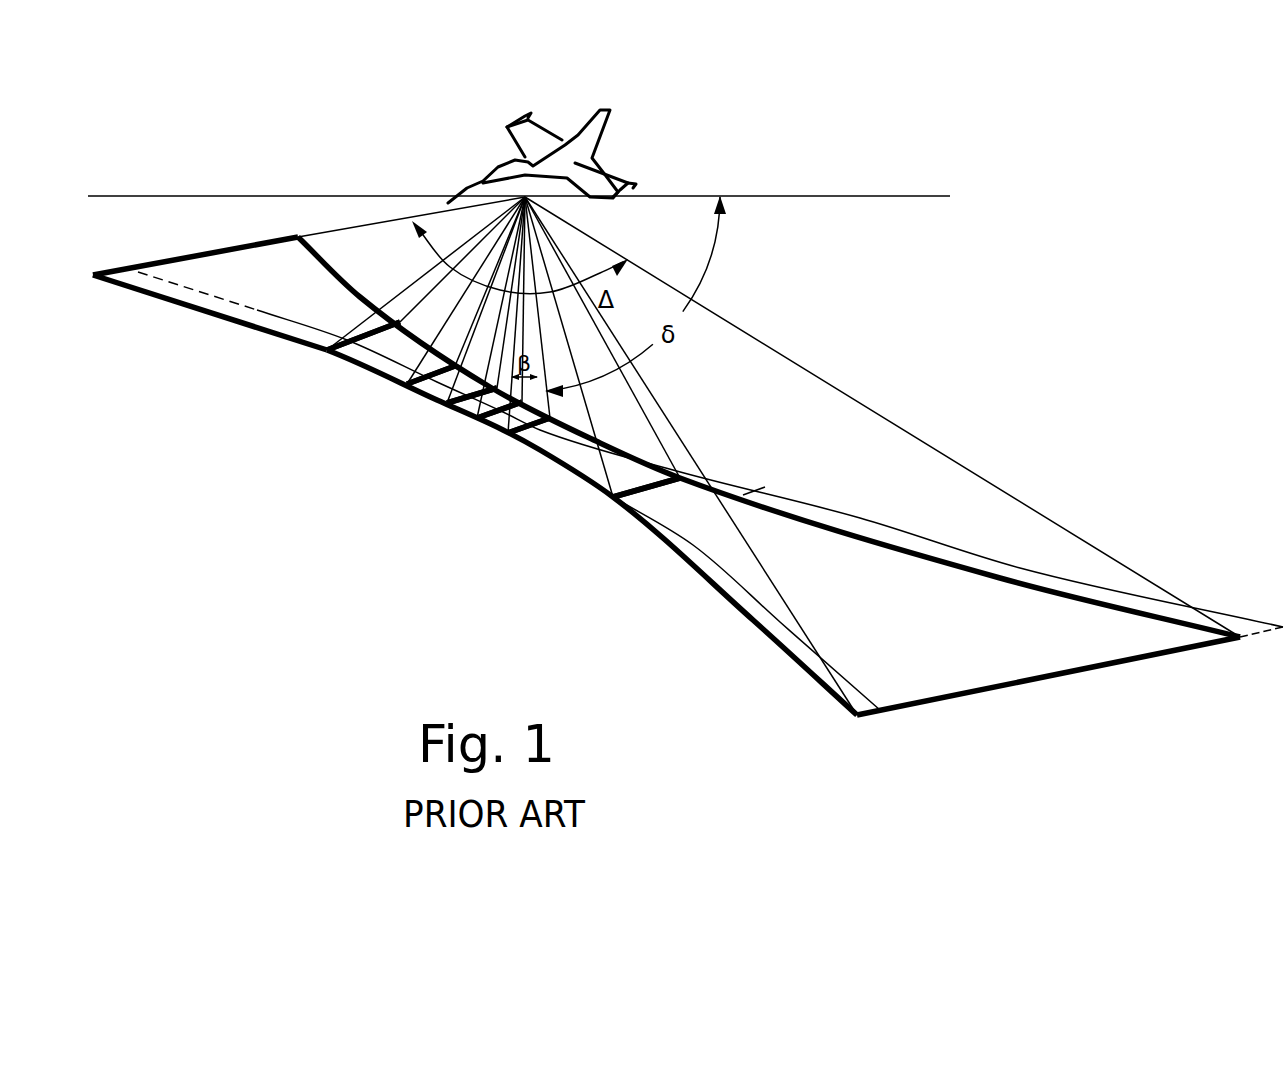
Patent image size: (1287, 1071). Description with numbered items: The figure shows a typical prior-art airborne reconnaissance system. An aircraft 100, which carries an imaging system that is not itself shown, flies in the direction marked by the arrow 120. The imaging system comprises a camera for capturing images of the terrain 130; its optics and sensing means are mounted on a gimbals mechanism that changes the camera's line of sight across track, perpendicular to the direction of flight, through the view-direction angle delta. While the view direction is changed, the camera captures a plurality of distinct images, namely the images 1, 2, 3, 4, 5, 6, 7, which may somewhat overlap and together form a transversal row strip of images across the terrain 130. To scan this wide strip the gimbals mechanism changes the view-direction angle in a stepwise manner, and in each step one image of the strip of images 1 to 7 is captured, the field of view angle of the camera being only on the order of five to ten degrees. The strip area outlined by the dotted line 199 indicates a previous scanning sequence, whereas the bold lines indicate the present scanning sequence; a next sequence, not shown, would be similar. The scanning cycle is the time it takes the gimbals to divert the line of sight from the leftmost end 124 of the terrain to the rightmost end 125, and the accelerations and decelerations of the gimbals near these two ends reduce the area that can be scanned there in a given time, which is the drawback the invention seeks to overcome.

The aircraft 100 is at (583, 137).
The rightmost end 125 is at (215, 250).
The terrain 130 is at (150, 297).
The image 1 is at (215, 305).
The arrow 120 is at (403, 230).
The image 2 is at (365, 355).
The image 3 is at (417, 390).
The image 4 is at (450, 402).
The image 5 is at (495, 415).
The image 6 is at (560, 452).
The image 7 is at (695, 549).
The leftmost end 124 is at (1040, 682).
The dotted line 199 is at (1237, 617).